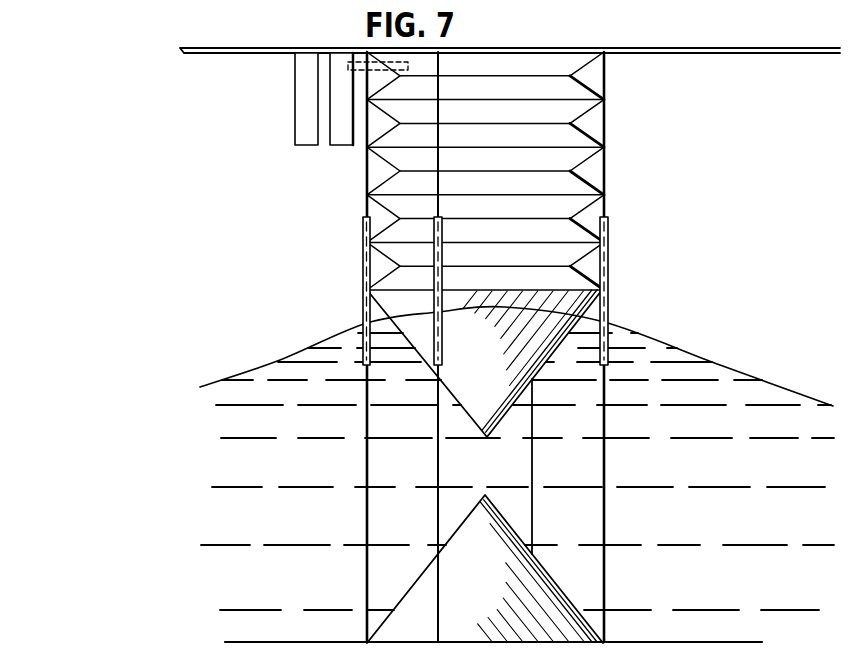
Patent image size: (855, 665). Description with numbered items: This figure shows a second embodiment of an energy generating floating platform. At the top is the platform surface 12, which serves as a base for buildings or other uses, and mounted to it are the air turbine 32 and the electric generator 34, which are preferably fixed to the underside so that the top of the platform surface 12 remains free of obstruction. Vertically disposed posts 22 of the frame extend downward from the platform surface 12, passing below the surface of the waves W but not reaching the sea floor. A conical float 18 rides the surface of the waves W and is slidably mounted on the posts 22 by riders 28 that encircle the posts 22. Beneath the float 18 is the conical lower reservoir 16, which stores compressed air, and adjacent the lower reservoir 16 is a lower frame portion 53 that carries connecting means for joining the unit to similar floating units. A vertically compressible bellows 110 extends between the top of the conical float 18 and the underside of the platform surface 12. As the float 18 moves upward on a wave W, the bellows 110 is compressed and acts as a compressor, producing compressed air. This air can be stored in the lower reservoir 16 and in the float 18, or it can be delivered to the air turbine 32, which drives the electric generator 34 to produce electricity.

The platform surface 12 is at (633, 53).
The vertically compressible bellows 110 is at (580, 135).
The electric generator 34 is at (308, 143).
The air turbine 32 is at (342, 143).
The riders 28 is at (362, 277).
The vertically disposed posts 22 is at (368, 508).
The conical float 18 is at (540, 368).
The conical lower reservoir 16 is at (520, 577).
The lower frame portion 53 is at (717, 642).
The waves W is at (717, 365).